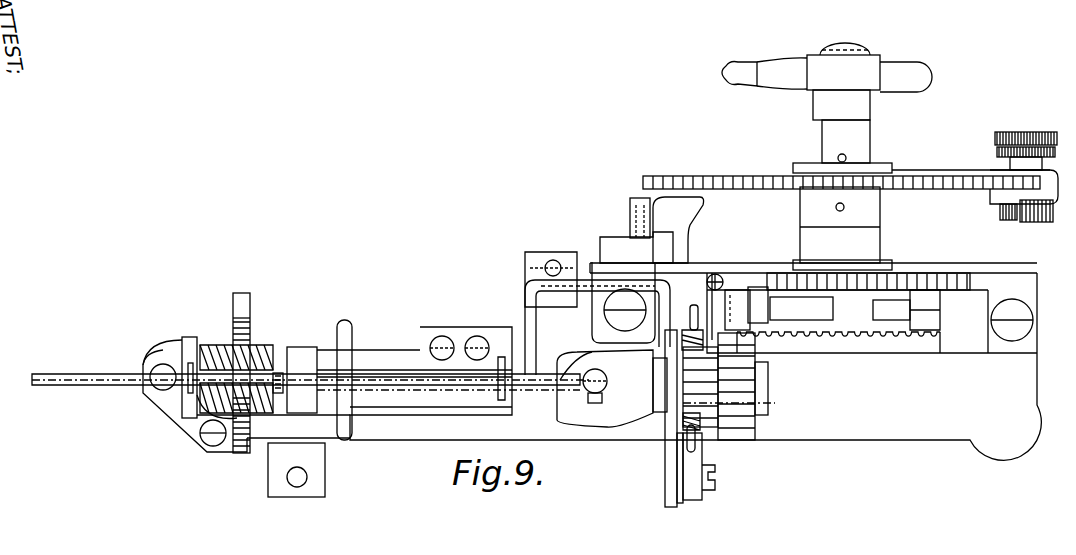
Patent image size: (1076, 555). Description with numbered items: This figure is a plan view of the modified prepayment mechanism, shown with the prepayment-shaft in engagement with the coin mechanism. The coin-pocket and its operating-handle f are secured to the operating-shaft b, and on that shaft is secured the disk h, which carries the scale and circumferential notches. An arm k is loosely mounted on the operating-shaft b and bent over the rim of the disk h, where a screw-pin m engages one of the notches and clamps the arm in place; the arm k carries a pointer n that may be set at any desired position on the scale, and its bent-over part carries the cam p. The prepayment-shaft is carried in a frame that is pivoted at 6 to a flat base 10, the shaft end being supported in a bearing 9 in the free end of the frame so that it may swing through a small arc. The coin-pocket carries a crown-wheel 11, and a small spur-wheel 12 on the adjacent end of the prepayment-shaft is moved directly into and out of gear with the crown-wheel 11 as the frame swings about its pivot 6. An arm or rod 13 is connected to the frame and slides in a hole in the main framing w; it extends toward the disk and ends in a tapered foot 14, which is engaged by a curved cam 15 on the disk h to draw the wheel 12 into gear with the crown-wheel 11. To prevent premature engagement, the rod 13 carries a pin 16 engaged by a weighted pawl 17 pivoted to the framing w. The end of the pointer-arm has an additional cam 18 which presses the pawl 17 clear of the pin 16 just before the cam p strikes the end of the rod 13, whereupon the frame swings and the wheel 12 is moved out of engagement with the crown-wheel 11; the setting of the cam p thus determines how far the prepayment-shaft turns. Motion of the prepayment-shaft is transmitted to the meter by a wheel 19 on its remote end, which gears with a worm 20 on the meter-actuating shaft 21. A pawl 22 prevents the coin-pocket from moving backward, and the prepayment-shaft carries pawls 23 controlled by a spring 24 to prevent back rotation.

The pivot 6 is at (150, 352).
The bearing 9 is at (660, 380).
The flat base 10 is at (536, 323).
The crown-wheel 11 is at (885, 340).
The spur-wheel 12 is at (745, 385).
The arm or rod 13 is at (690, 255).
The tapered foot 14 is at (678, 230).
The curved cam 15 is at (703, 220).
The pin 16 is at (632, 226).
The weighted pawl 17 is at (636, 247).
The additional cam 18 is at (1007, 210).
The wheel 19 is at (250, 453).
The worm 20 is at (241, 392).
The meter-actuating shaft 21 is at (250, 300).
The pawl 22 is at (855, 310).
The pawl 23 is at (698, 458).
The spring 24 is at (687, 423).
The operating-shaft b is at (842, 146).
The operating-handle f is at (882, 90).
The disk or circular plate h is at (723, 177).
The arm k is at (912, 178).
The screw-pin m is at (1038, 133).
The pointer n is at (975, 180).
The cam or projection p is at (1035, 216).
The side framing w is at (928, 274).